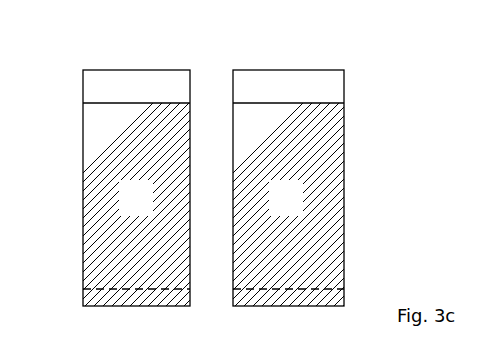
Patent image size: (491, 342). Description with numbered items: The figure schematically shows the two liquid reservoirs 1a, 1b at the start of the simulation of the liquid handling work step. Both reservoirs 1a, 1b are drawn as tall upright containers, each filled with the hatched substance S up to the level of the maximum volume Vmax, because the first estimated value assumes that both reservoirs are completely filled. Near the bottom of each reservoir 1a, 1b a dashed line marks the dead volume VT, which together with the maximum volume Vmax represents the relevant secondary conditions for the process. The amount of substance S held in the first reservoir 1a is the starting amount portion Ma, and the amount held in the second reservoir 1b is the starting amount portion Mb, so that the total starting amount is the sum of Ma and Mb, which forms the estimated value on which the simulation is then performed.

The reservoir 1a is at (245, 156).
The reservoir 1b is at (295, 156).
The starting amount portion Ma is at (67, 102).
The starting amount portion Mb is at (216, 102).
The substance S is at (208, 198).
The maximum volume Vmax is at (182, 93).
The dead volume VT is at (201, 290).